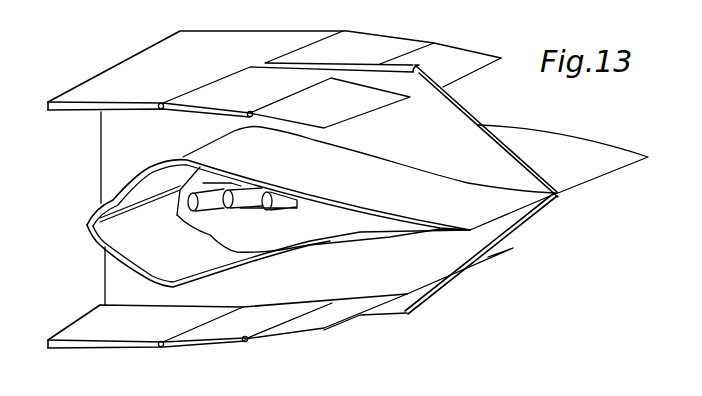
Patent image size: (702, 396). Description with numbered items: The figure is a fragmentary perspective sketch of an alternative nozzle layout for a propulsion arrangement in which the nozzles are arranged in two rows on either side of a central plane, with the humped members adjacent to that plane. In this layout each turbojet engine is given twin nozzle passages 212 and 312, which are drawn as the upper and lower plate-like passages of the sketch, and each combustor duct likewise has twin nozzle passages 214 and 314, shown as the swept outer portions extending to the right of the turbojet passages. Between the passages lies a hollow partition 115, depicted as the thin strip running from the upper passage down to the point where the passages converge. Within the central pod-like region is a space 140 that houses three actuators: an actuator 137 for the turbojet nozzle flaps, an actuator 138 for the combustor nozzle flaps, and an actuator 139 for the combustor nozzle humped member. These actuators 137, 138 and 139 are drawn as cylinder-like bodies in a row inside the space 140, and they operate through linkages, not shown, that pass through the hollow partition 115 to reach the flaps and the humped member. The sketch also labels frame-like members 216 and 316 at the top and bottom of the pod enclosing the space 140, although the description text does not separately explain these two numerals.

The hollow partition 115 is at (421, 68).
The actuator for the turbojet nozzle flaps 137 is at (190, 208).
The actuator for the combustor nozzle flaps 138 is at (226, 215).
The actuator for the combustor nozzle humped member 139 is at (268, 194).
The space 140 is at (243, 258).
The turbojet nozzle passage 212 is at (101, 151).
The combustor nozzle passage 214 is at (472, 70).
The upper frame 216 is at (192, 136).
The turbojet nozzle passage 312 is at (106, 289).
The combustor nozzle passage 314 is at (528, 222).
The lower frame 316 is at (171, 288).